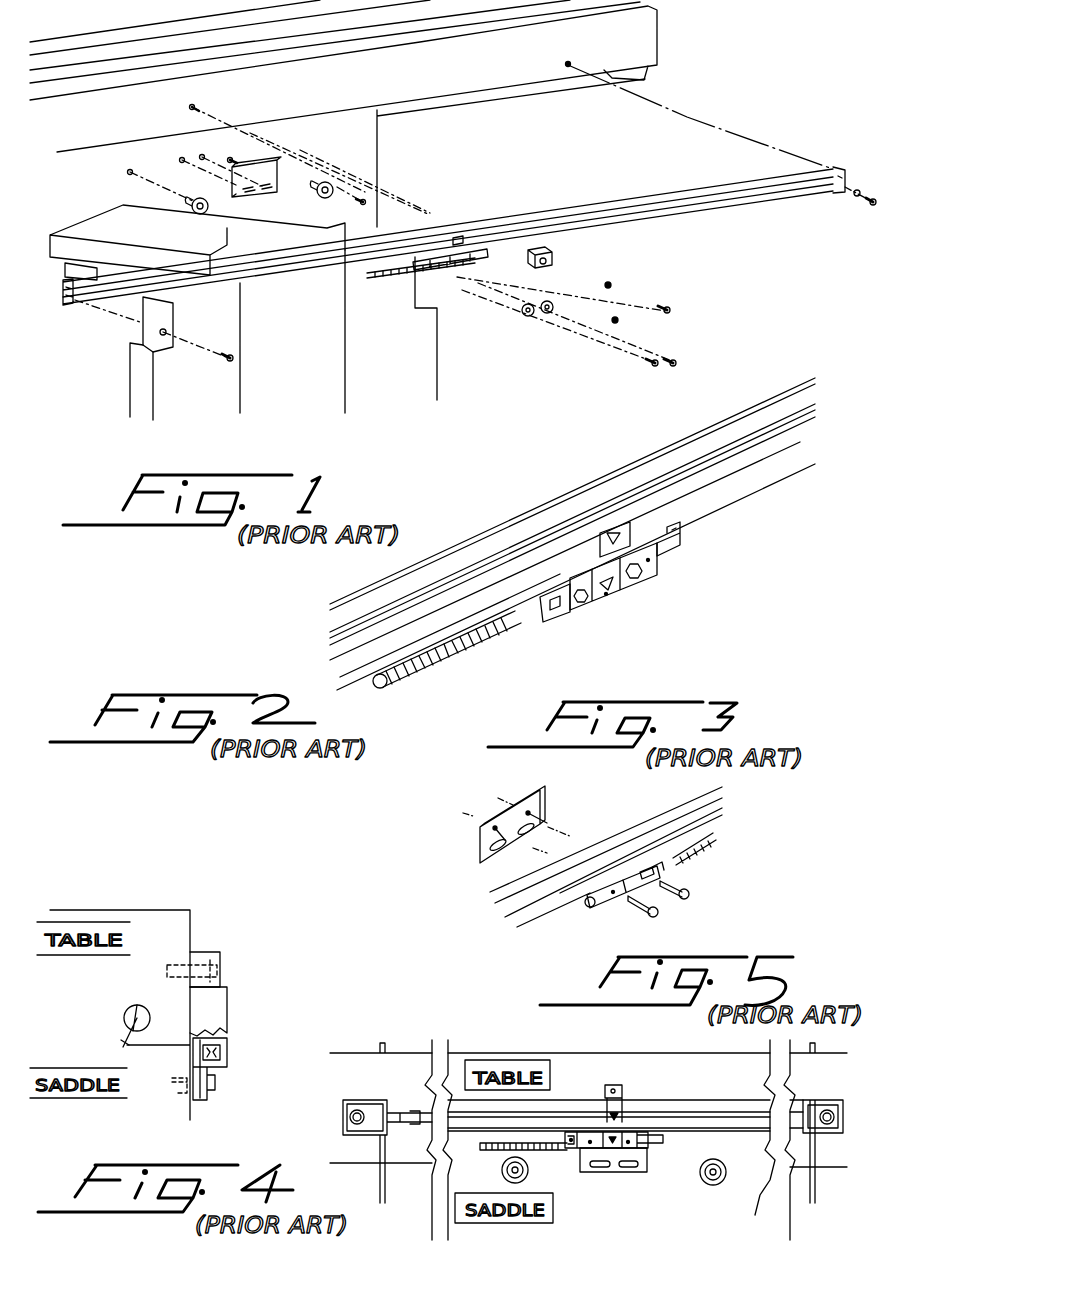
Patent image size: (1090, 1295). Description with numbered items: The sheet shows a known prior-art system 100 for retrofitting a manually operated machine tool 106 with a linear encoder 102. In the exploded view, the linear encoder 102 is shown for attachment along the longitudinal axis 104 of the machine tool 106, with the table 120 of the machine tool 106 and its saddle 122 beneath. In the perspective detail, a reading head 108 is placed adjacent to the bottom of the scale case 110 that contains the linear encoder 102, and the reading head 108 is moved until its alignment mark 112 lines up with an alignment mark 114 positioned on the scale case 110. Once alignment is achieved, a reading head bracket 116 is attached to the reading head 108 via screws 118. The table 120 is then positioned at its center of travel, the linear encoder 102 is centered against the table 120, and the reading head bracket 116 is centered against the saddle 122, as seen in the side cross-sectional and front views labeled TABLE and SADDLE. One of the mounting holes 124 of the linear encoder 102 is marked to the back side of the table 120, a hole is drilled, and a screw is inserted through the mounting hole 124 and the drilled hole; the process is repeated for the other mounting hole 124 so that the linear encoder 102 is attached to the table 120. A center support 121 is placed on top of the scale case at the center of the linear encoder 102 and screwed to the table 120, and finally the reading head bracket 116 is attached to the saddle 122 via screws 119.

In FIG. 1, the system 100 is at (74, 349).
In FIG. 1, the linear encoder 102 is at (699, 214).
In FIG. 2, the linear encoder 102 is at (800, 450).
In FIG. 3, the linear encoder 102 is at (720, 817).
In FIG. 4, the linear encoder 102 is at (227, 1007).
In FIG. 5, the linear encoder 102 is at (707, 1100).
In FIG. 1, the longitudinal axis 104 is at (657, 40).
In FIG. 1, the machine tool 106 is at (97, 133).
In FIG. 2, the reading head 108 is at (573, 603).
In FIG. 3, the reading head 108 is at (670, 866).
In FIG. 5, the reading head 108 is at (653, 1143).
In FIG. 1, the scale case 110 is at (623, 224).
In FIG. 2, the scale case 110 is at (730, 497).
In FIG. 5, the scale case 110 is at (550, 1102).
In FIG. 2, the alignment mark 112 is at (613, 587).
In FIG. 2, the alignment mark 114 is at (613, 527).
In FIG. 3, the reading head bracket 116 is at (492, 814).
In FIG. 4, the reading head bracket 116 is at (208, 1083).
In FIG. 5, the reading head bracket 116 is at (633, 1175).
In FIG. 3, the screws 118 is at (627, 913).
In FIG. 4, the screws 119 is at (171, 1105).
In FIG. 1, the table 120 is at (314, 96).
In FIG. 5, the table 120 is at (596, 1079).
In FIG. 4, the center support 121 is at (220, 968).
In FIG. 5, the center support 121 is at (623, 1092).
In FIG. 1, the saddle 122 is at (81, 219).
In FIG. 5, the saddle 122 is at (604, 1216).
In FIG. 1, the mounting holes 124 is at (82, 306).
In FIG. 5, the mounting holes 124 is at (383, 1074).